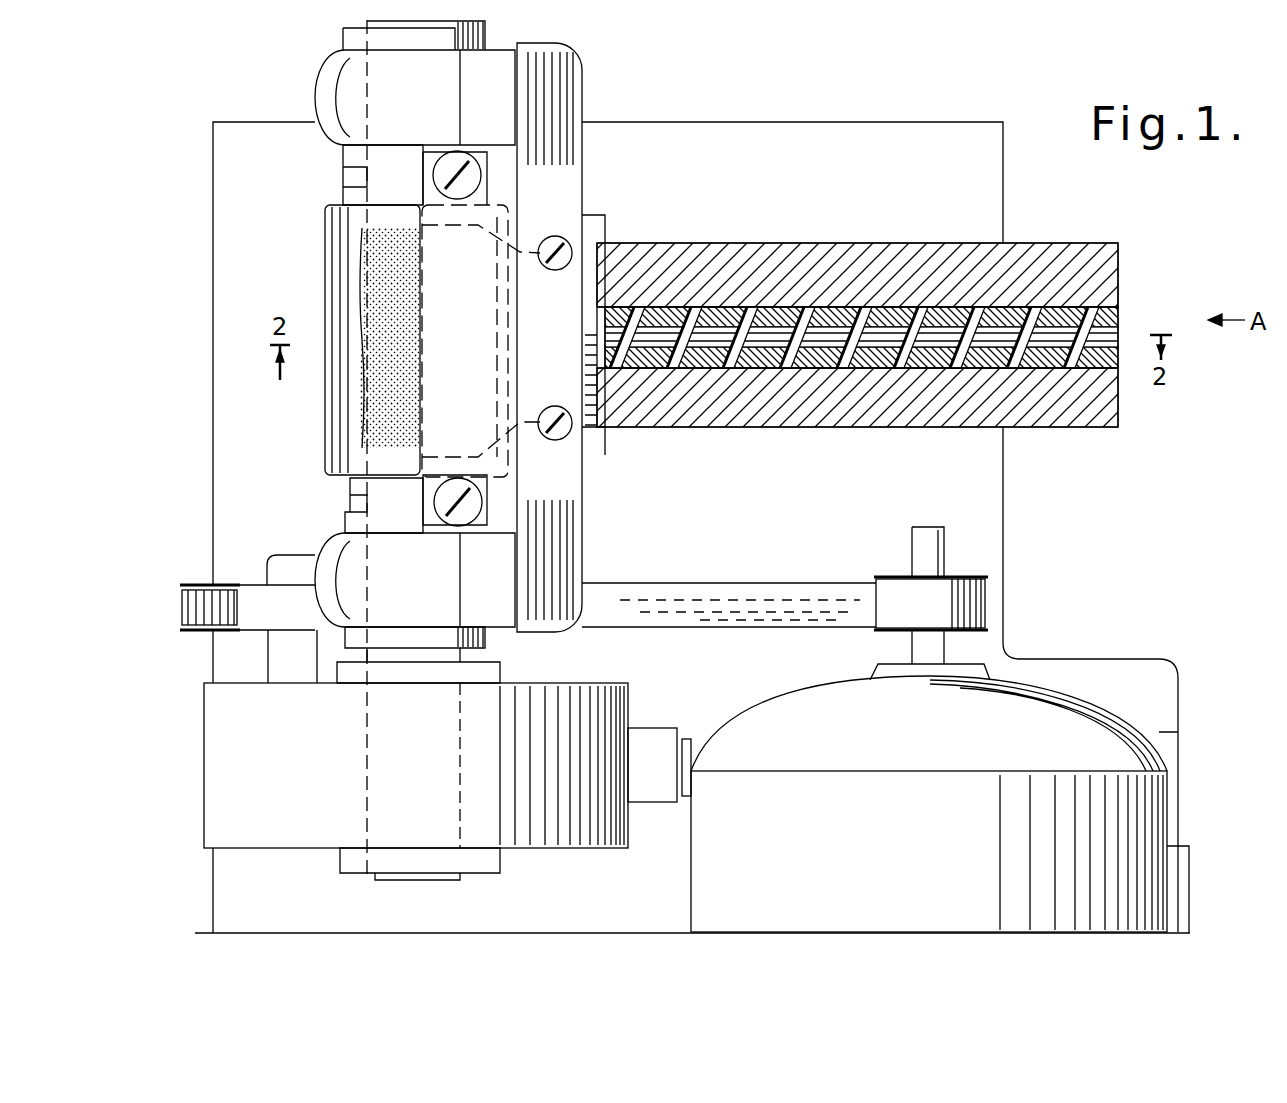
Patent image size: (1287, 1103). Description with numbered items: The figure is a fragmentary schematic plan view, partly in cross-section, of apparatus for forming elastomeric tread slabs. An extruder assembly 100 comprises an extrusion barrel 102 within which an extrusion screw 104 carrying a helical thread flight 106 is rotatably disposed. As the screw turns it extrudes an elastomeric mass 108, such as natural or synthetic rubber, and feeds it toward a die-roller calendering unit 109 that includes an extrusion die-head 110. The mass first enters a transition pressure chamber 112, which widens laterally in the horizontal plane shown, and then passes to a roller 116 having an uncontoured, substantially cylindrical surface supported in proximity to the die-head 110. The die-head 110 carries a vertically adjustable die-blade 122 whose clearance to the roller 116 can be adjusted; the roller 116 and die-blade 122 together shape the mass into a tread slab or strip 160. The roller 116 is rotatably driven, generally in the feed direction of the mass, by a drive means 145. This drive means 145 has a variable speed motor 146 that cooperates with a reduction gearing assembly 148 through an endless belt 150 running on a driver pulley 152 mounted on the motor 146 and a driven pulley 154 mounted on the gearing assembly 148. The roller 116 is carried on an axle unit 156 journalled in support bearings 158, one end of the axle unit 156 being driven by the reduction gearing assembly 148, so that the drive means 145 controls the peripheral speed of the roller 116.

The extruder assembly 100 is at (904, 354).
The extrusion barrel 102 is at (1110, 260).
The extrusion screw 104 is at (1095, 330).
The helical thread flight 106 is at (1105, 300).
The elastomeric mass 108 is at (1043, 362).
The die-roller calendering unit 109 is at (593, 318).
The extrusion die-head 110 is at (582, 80).
The transition pressure chamber 112 is at (606, 238).
The roller 116 is at (325, 216).
The die-blade 122 is at (420, 414).
The drive means 145 is at (1218, 812).
The variable speed motor 146 is at (958, 832).
The reduction gearing assembly 148 is at (330, 772).
The endless belt 150 is at (752, 582).
The driver pulley 152 is at (988, 583).
The driven pulley 154 is at (183, 585).
The axle unit 156 is at (360, 180).
The support bearings 158 is at (315, 86).
The tread slab or strip 160 is at (365, 260).